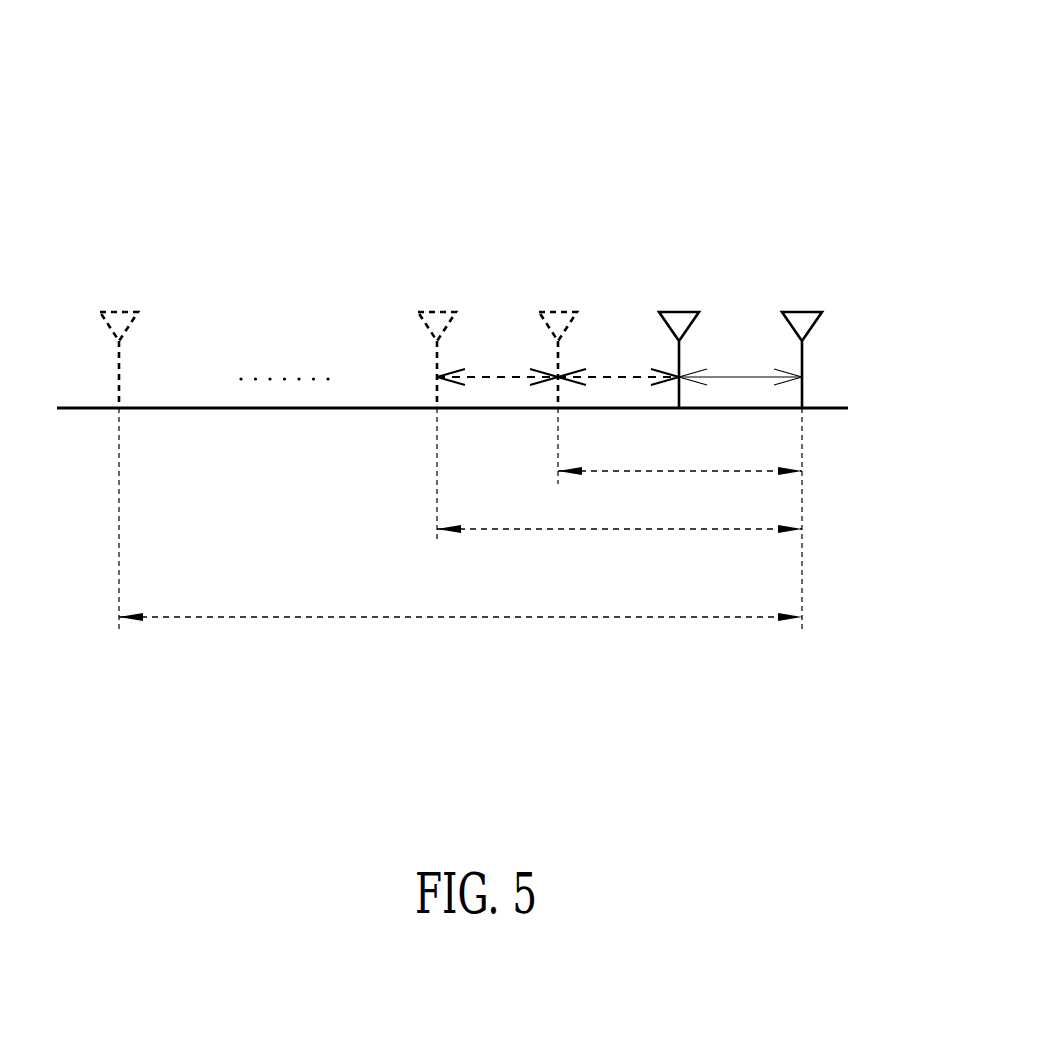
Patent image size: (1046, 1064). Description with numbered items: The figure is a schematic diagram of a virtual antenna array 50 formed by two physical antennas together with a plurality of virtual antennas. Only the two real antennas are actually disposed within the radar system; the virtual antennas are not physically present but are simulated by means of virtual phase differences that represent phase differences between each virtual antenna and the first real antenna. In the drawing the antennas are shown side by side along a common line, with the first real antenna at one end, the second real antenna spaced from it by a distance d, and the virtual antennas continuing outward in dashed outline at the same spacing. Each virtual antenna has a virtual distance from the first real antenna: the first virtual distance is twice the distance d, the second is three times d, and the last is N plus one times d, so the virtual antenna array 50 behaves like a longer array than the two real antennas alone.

The virtual antenna array 50 is at (466, 321).